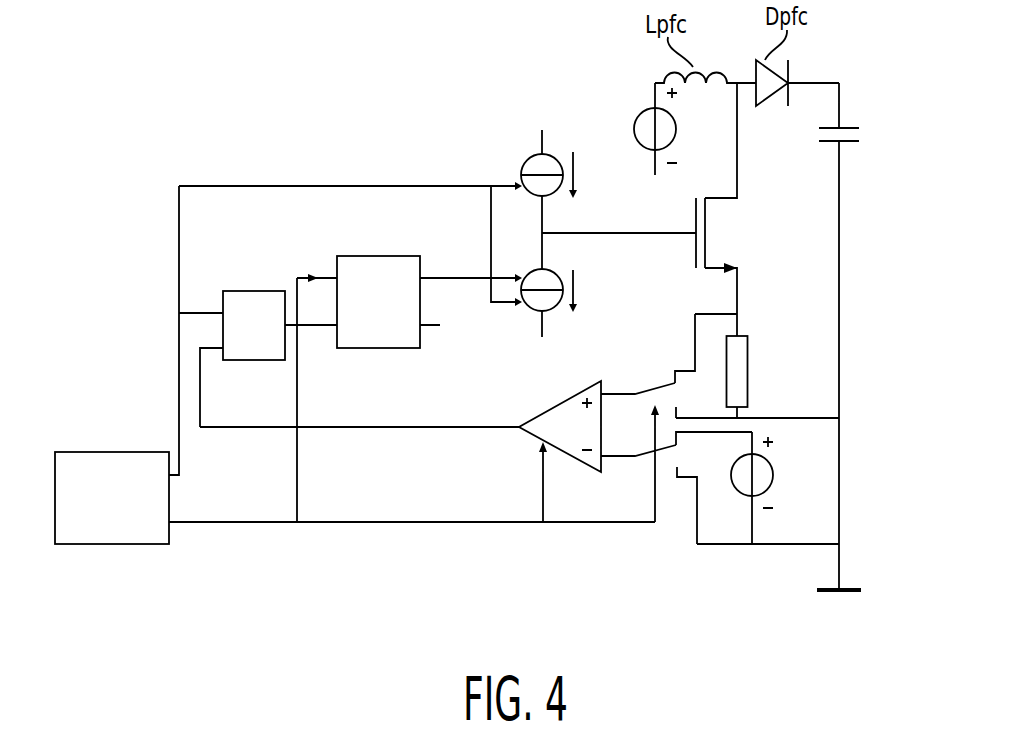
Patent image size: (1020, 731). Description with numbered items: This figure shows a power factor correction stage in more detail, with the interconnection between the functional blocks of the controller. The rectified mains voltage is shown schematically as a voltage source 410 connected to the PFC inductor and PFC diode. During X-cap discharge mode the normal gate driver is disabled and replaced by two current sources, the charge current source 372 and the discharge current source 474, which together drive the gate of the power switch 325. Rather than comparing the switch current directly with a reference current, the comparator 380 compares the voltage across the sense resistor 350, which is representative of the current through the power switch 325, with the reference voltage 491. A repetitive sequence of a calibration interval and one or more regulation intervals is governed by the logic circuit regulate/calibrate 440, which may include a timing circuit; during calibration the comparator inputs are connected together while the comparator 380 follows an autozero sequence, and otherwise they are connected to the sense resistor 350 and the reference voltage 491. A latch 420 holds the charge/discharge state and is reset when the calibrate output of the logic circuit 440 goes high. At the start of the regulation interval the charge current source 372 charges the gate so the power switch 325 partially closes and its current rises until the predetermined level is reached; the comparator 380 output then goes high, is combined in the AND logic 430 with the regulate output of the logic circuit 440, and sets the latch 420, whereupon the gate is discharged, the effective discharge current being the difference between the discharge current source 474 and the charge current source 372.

The voltage source 410 is at (638, 113).
The charge current source 372 is at (527, 155).
The discharge current source 474 is at (537, 315).
The power switch 325 is at (707, 245).
The sense resistor 350 is at (747, 381).
The comparator 380 is at (530, 435).
The latch 420 is at (377, 343).
The "AND" logic 430 is at (242, 297).
The logic circuit regulate/calibrate 440 is at (118, 452).
The reference voltage 491 is at (740, 498).